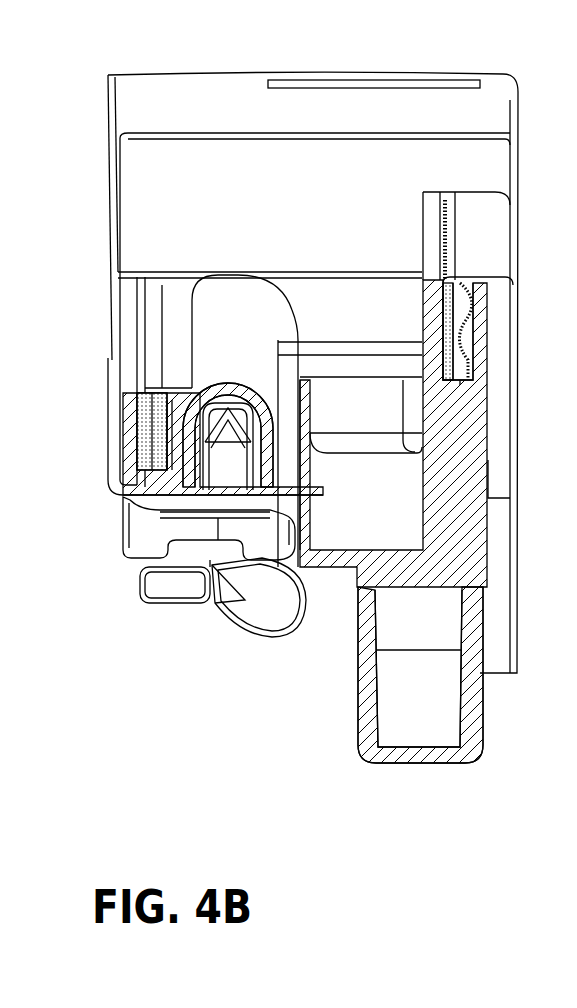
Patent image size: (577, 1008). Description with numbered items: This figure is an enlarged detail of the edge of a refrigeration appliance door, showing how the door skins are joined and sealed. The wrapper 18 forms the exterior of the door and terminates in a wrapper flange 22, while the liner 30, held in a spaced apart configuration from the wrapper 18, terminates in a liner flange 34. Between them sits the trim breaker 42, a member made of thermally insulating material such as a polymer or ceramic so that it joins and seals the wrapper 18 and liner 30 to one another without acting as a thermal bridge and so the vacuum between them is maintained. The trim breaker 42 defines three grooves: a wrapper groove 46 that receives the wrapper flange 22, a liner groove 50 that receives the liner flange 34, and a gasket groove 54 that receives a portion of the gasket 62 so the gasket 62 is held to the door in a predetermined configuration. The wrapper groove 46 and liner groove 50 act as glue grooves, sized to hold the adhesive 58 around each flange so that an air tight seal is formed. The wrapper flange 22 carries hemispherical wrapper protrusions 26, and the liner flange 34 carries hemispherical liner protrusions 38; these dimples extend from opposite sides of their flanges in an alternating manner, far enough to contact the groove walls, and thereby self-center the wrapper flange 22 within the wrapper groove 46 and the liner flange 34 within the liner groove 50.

The wrapper 18 is at (195, 105).
The wrapper flange 22 is at (133, 407).
The wrapper protrusions 26 is at (145, 442).
The liner 30 is at (501, 226).
The liner flange 34 is at (462, 366).
The liner protrusions 38 is at (463, 298).
The trim breaker 42 is at (333, 556).
The wrapper groove 46 is at (150, 483).
The liner groove 50 is at (453, 385).
The gasket groove 54 is at (226, 386).
The adhesive 58 is at (150, 470).
The gasket 62 is at (127, 557).